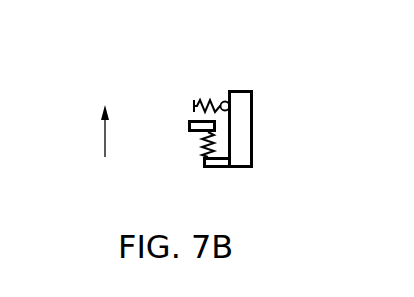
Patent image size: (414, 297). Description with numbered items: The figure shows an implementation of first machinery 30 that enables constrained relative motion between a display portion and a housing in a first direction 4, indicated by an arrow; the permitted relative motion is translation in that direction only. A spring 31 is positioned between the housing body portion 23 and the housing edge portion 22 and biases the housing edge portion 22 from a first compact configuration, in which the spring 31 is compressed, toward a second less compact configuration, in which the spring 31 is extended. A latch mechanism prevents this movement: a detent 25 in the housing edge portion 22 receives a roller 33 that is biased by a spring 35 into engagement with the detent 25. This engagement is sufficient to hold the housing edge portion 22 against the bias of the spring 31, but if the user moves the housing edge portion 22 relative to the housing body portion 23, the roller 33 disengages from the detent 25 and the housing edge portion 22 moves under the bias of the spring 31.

The first machinery 30 is at (138, 64).
The first direction 4 is at (105, 132).
The housing edge portion 22 is at (247, 155).
The detent 25 is at (248, 112).
The spring 31 is at (203, 151).
The housing body portion 23 is at (188, 130).
The spring 35 is at (203, 100).
The roller 33 is at (225, 101).